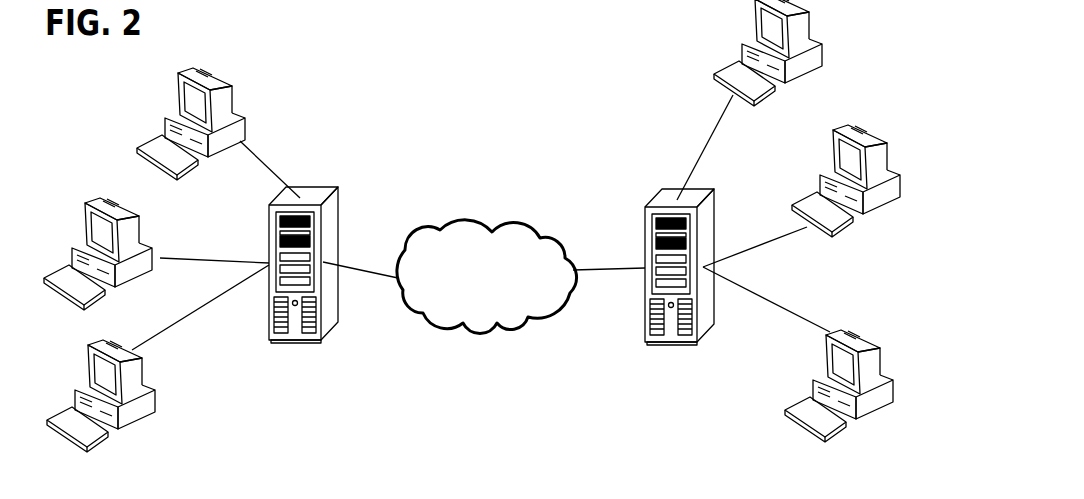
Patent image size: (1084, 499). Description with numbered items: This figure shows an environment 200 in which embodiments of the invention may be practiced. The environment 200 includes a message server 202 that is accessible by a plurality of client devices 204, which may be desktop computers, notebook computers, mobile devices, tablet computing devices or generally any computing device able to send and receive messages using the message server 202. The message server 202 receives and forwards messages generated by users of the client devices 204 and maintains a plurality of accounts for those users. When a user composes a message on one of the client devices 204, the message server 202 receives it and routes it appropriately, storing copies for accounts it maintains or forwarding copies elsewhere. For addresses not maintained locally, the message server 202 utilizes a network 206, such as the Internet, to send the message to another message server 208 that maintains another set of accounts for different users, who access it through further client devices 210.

The environment 200 is at (473, 160).
The message server 202 is at (325, 188).
The client devices 204 is at (222, 82).
The network 206 is at (492, 330).
The another message server 208 is at (658, 193).
The client computers 210 is at (826, 47).